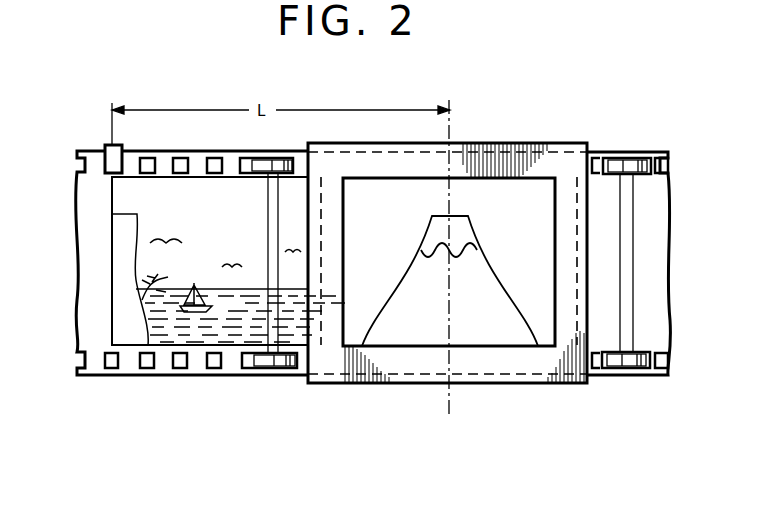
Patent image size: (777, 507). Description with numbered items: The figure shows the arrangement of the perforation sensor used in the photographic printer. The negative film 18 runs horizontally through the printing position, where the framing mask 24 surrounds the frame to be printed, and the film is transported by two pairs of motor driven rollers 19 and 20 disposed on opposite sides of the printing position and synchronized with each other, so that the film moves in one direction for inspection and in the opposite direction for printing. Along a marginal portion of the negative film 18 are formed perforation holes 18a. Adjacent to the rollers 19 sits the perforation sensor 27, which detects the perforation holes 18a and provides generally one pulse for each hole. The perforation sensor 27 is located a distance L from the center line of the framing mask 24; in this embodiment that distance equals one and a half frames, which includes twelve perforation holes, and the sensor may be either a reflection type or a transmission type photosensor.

The negative film 18 is at (88, 289).
The perforation holes 18a is at (180, 362).
The motor driven rollers 19 is at (280, 366).
The motor driven rollers 20 is at (628, 368).
The framing mask 24 is at (423, 366).
The perforation sensor 27 is at (109, 156).